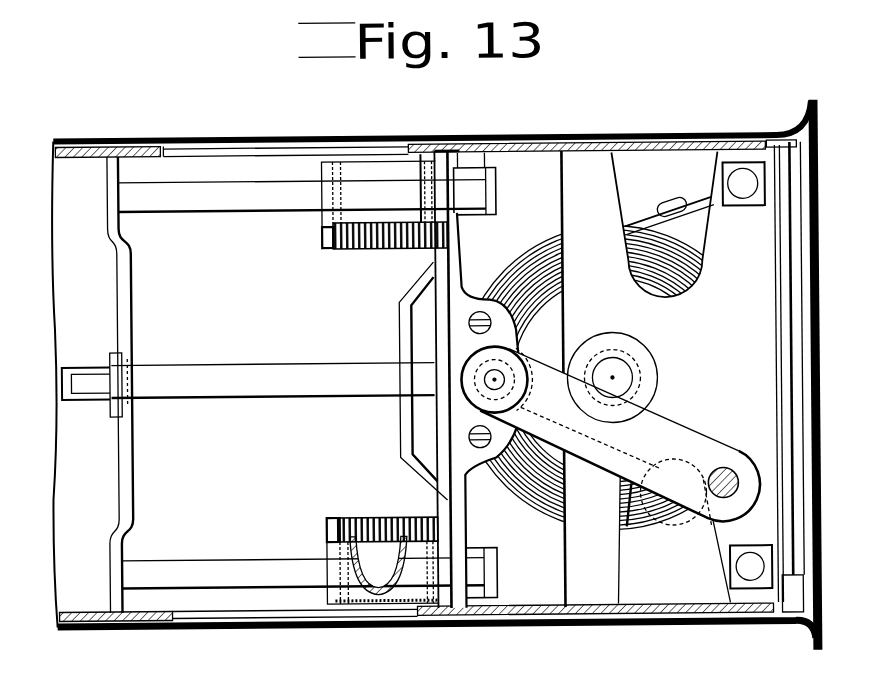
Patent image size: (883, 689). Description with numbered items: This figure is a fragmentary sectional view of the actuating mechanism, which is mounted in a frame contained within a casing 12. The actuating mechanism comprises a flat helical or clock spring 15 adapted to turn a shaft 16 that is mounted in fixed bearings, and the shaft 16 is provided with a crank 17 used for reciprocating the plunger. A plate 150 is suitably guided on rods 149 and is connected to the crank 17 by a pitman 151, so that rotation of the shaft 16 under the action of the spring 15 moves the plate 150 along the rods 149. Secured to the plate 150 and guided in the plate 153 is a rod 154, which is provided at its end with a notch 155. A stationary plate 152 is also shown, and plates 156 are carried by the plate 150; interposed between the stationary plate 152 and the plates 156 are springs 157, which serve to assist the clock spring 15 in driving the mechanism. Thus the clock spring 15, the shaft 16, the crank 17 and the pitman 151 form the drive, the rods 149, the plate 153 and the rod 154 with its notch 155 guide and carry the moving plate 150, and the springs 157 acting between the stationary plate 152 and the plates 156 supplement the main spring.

The casing 12 is at (812, 270).
The flat helical or clock spring 15 is at (536, 485).
The shaft 16 is at (609, 383).
The crank 17 is at (714, 482).
The rods 149 is at (219, 196).
The plate 150 is at (435, 296).
The pitman 151 is at (637, 428).
The stationary plate 152 is at (402, 334).
The plate 153 is at (126, 486).
The rod 154 is at (212, 377).
The notch 155 is at (87, 391).
The plates 156 is at (324, 238).
The springs 157 is at (374, 252).